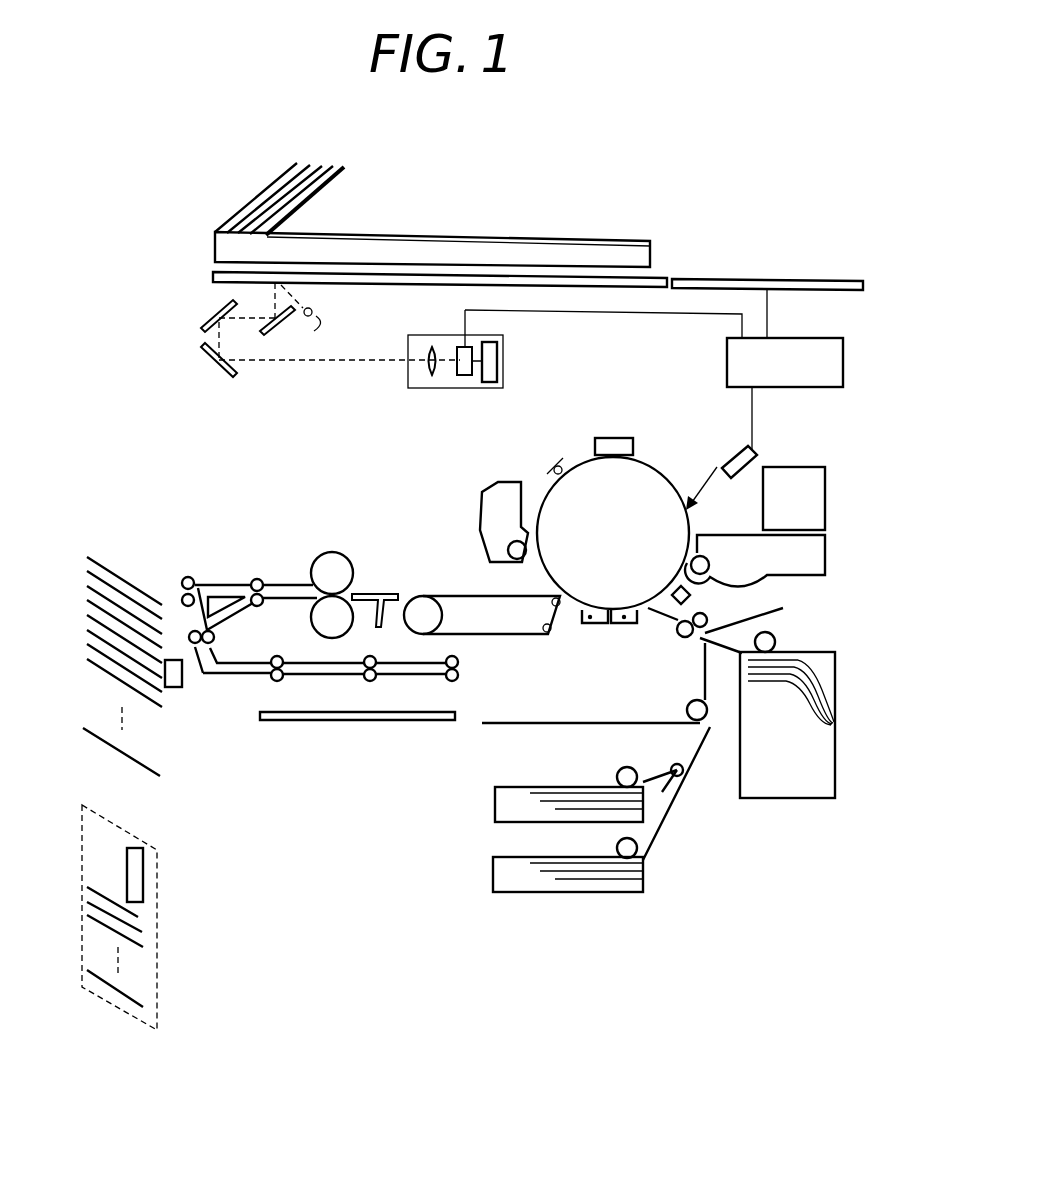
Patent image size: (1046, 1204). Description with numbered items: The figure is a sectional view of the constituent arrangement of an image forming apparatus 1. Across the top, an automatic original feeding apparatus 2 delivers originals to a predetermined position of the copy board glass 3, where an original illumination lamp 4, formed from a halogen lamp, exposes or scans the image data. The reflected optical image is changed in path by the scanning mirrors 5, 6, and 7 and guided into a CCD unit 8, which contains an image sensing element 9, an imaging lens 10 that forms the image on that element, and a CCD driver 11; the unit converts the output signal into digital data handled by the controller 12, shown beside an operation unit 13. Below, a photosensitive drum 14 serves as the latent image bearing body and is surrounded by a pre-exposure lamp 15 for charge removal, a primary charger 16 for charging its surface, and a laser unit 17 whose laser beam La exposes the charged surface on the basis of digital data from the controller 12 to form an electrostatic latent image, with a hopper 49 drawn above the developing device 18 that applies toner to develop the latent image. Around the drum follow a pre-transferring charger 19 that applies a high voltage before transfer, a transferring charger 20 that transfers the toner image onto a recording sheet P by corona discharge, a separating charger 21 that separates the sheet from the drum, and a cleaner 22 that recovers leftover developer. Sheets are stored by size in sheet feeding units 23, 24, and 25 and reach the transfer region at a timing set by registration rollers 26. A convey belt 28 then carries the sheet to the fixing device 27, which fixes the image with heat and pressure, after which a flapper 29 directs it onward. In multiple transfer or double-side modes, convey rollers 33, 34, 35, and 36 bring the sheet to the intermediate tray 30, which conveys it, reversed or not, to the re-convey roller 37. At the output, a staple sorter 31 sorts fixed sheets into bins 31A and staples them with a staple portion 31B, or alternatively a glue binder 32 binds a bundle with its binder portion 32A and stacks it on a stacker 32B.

The image forming apparatus 1 is at (497, 197).
The automatic original feeding apparatus 2 is at (256, 210).
The copy board glass 3 is at (660, 274).
The original illumination lamp 4 is at (320, 312).
The scanning mirror 5 is at (284, 328).
The scanning mirror 6 is at (212, 314).
The scanning mirror 7 is at (214, 366).
The CCD unit 8 is at (422, 389).
The image sensing element 9 is at (464, 376).
The imaging lens 10 is at (432, 346).
The CCD driver 11 is at (492, 383).
The controller 12 is at (818, 340).
The operation panel 13 is at (826, 280).
The photosensitive drum 14 is at (545, 572).
The pre-exposure lamp 15 is at (556, 462).
The primary charger 16 is at (612, 438).
The laser unit 17 is at (734, 448).
The laser beam La is at (707, 484).
The toner hopper 49 is at (816, 466).
The developing device 18 is at (820, 578).
The pre-transferring charger 19 is at (693, 596).
The transferring charger 20 is at (625, 625).
The separating charger 21 is at (588, 625).
The cleaner 22 is at (497, 484).
The sheet feeding unit 23 is at (836, 654).
The sheet feeding unit 24 is at (496, 788).
The sheet feeding unit 25 is at (494, 858).
The registration rollers 26 is at (682, 641).
The fixing device 27 is at (332, 552).
The convey belt 28 is at (437, 595).
The flapper 29 is at (222, 590).
The intermediate tray 30 is at (338, 721).
The staple sorter 31 is at (112, 561).
The bin 31A is at (104, 565).
The staple portion 31B is at (178, 690).
The glue binder 32 is at (138, 834).
The binder portion 32A is at (145, 862).
The stacker 32B is at (145, 932).
The convey roller 33 is at (216, 634).
The convey roller 34 is at (284, 680).
The convey roller 35 is at (377, 680).
The convey roller 36 is at (459, 680).
The re-convey roller 37 is at (686, 710).
The recording sheet P is at (590, 795).